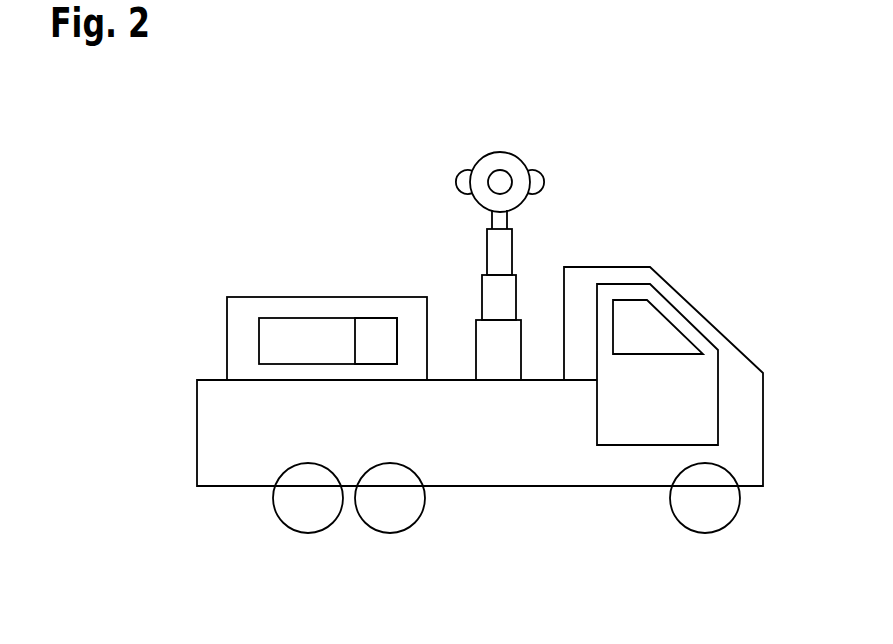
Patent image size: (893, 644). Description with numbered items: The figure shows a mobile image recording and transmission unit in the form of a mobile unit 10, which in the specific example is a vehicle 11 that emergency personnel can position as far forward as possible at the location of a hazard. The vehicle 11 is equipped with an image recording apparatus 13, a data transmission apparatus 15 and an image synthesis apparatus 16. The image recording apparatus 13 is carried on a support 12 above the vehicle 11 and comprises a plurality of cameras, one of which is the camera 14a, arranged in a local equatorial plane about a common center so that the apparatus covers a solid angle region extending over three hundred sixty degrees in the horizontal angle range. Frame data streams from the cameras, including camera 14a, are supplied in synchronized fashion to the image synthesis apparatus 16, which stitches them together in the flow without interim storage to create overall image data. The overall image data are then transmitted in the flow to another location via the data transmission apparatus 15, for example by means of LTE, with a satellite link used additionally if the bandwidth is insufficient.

The mobile unit 10 is at (87, 148).
The vehicle 11 is at (213, 447).
The telescopic mast 12 is at (502, 255).
The image recording apparatus 13 is at (523, 153).
The camera 14a is at (464, 176).
The data transmission apparatus 15 is at (307, 332).
The image synthesis apparatus 16 is at (377, 332).